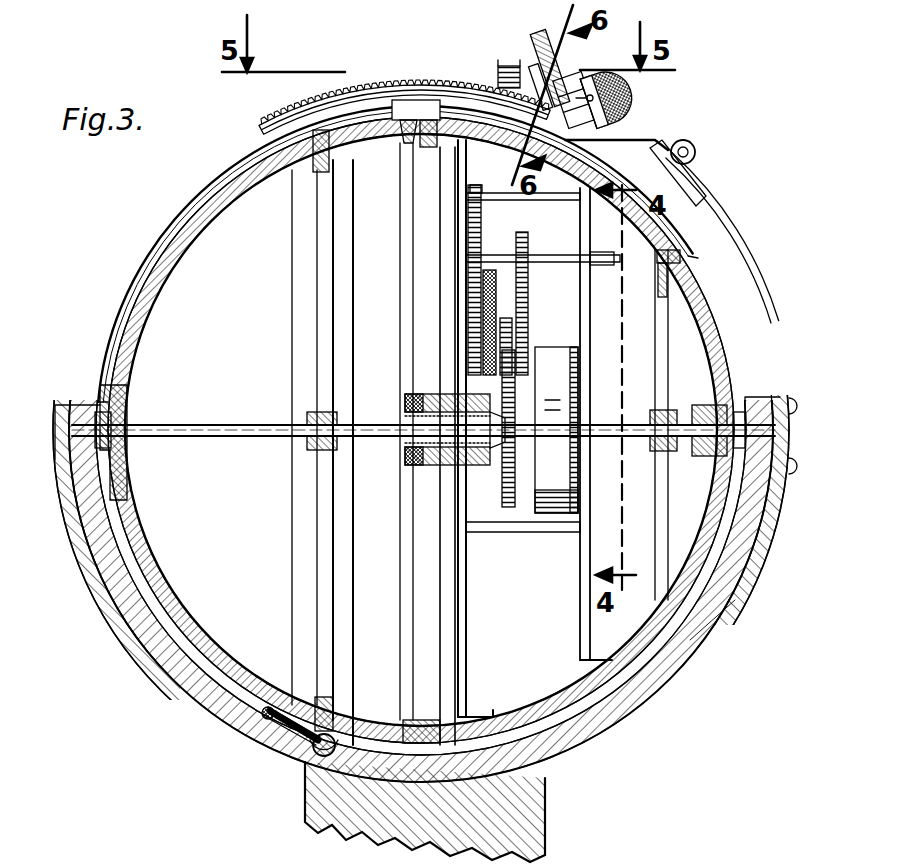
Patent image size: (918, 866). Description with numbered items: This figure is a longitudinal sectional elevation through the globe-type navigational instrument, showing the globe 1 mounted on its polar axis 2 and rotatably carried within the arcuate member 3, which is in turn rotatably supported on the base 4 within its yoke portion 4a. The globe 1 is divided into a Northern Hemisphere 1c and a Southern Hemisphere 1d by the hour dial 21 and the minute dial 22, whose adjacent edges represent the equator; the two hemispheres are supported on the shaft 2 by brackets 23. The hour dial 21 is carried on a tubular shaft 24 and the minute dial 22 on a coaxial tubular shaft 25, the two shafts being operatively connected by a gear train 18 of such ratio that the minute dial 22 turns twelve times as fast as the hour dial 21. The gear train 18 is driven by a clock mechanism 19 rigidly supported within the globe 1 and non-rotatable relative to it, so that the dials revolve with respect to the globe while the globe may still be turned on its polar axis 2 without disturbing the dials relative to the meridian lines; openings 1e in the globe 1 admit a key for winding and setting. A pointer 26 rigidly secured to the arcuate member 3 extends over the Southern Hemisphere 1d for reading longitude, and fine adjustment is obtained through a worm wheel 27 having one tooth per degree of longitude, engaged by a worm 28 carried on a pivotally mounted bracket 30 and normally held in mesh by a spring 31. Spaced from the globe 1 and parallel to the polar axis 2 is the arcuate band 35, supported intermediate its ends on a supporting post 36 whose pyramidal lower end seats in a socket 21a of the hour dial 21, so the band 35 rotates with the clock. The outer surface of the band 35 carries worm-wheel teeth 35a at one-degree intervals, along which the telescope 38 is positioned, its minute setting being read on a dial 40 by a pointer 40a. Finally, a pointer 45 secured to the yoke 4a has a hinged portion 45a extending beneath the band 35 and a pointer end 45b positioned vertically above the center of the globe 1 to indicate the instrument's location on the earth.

The globe 1 is at (605, 672).
The Northern Hemisphere 1c is at (690, 678).
The Southern Hemisphere 1d is at (145, 648).
The openings 1e is at (690, 250).
The polar axis 2 is at (275, 435).
The arcuate member 3 is at (585, 723).
The base 4 is at (510, 818).
The yoke portion 4a is at (700, 645).
The gear train 18 is at (470, 340).
The clock mechanism 19 is at (543, 520).
The hour dial 21 is at (410, 643).
The socket 21a is at (405, 140).
The minute dial 22 is at (440, 668).
The brackets 23 is at (110, 390).
The tubular shaft 24 is at (412, 450).
The tubular shaft 25 is at (420, 462).
The pointer 26 is at (396, 120).
The worm wheel 27 is at (320, 198).
The worm 28 is at (320, 765).
The bracket 30 is at (262, 757).
The spring 31 is at (300, 765).
The arcuate band 35 is at (405, 103).
The teeth 35a is at (325, 92).
The supporting post 36 is at (425, 113).
The telescope 38 is at (555, 84).
The dial 40 is at (600, 115).
The pointer 40a is at (594, 98).
The pointer 45 is at (765, 290).
The pointer portion 45a is at (628, 143).
The pointer end 45b is at (485, 80).